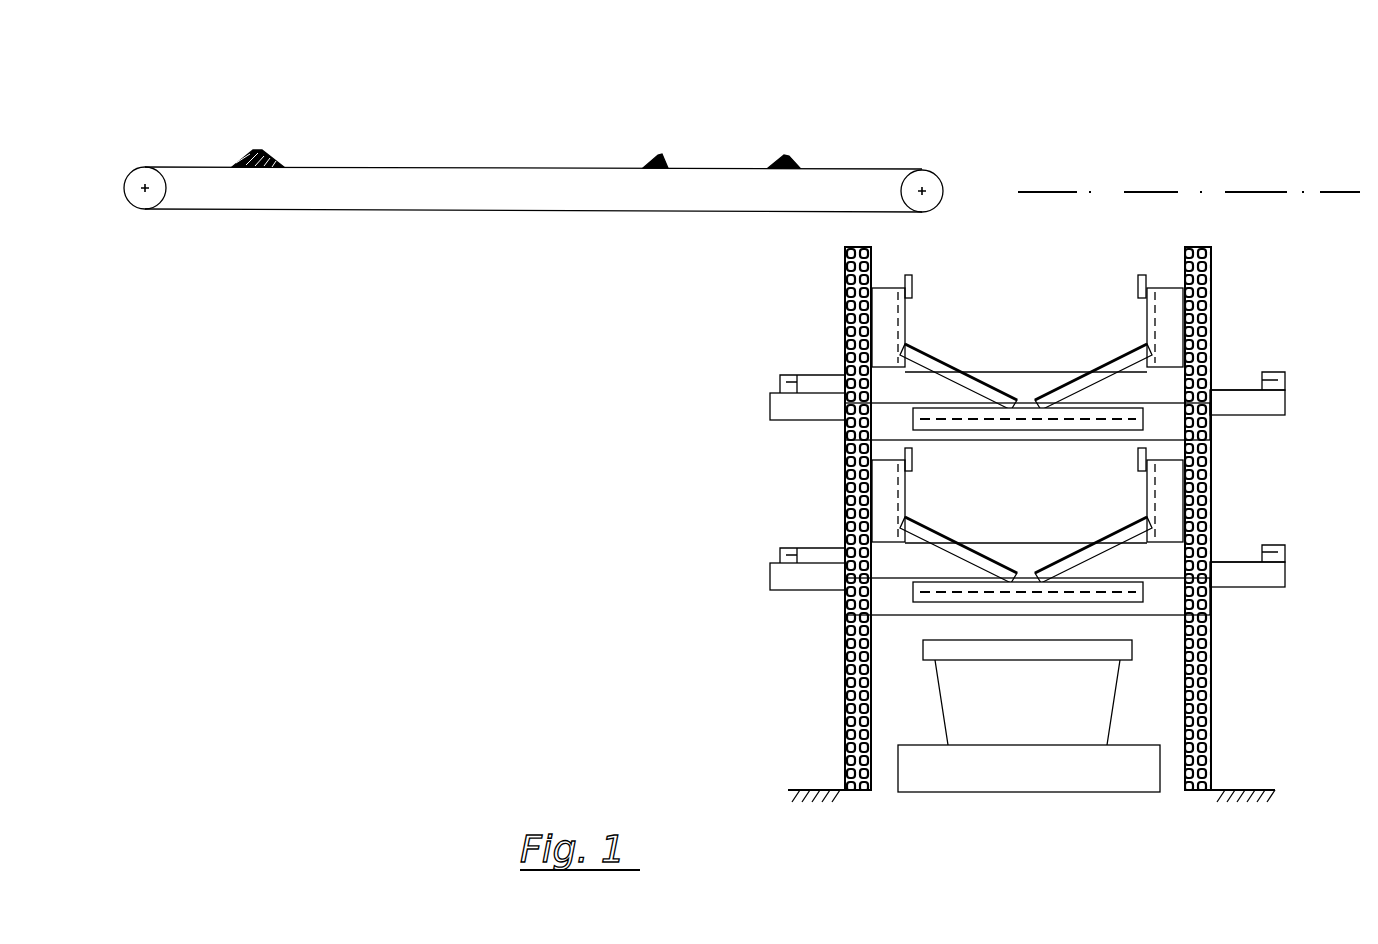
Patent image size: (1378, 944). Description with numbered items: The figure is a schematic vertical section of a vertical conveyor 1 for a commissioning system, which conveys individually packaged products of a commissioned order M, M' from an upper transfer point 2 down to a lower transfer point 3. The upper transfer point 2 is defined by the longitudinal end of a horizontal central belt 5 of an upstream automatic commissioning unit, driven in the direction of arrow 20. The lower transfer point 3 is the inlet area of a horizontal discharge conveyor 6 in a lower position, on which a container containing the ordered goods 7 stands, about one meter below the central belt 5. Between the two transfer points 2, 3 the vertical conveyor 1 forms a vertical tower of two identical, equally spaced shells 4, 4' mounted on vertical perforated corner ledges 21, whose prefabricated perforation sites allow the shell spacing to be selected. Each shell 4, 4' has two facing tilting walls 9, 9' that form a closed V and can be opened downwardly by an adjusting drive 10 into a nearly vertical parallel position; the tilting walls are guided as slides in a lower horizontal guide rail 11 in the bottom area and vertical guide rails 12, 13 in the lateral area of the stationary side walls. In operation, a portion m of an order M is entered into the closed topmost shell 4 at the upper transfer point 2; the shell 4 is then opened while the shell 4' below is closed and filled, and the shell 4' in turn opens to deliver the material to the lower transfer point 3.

The vertical conveyor 1 is at (695, 476).
The upper transfer point 2 is at (1260, 186).
The lower transfer point 3 is at (1272, 792).
The shell 4 is at (1027, 357).
The shell 4' is at (1027, 531).
The horizontal central belt 5 is at (435, 209).
The horizontal discharge conveyor 6 is at (1125, 786).
The container containing the ordered goods 7 is at (1108, 700).
The tilting wall 9 is at (958, 364).
The tilting wall 9' is at (1093, 364).
The adjusting drive 10 is at (835, 388).
The lower horizontal guide rail 11 is at (1028, 590).
The vertical guide rail 12 is at (905, 500).
The vertical guide rail 13 is at (1148, 492).
The arrow 20 is at (365, 117).
The vertical perforated corner ledge 21 is at (845, 712).
The commissioned order M is at (722, 68).
The commissioned order M' is at (258, 106).
The portion of an order m is at (656, 155).